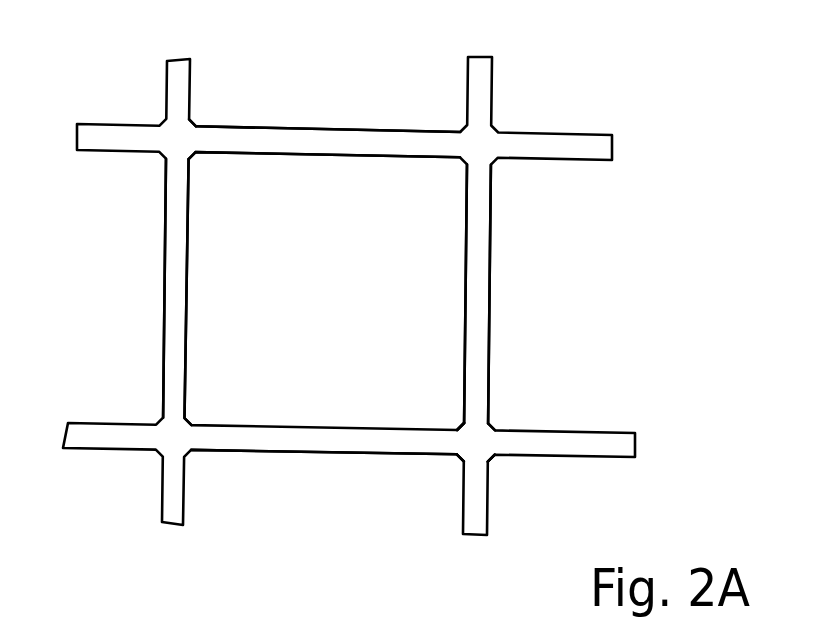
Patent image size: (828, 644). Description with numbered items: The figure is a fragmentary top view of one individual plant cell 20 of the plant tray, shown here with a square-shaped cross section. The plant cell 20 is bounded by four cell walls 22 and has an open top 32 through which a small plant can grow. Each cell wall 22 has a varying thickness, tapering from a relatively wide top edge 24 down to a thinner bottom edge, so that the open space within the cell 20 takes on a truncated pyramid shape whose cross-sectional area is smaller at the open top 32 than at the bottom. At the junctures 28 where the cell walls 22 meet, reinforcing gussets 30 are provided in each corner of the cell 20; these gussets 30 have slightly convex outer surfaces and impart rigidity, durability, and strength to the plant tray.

The plant cell 20 is at (224, 326).
The cell wall 22 is at (342, 131).
The top edge 24 is at (375, 147).
The juncture 28 is at (185, 132).
The reinforcing gusset 30 is at (197, 155).
The open top 32 is at (434, 373).